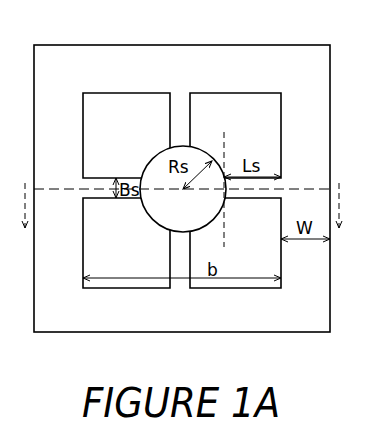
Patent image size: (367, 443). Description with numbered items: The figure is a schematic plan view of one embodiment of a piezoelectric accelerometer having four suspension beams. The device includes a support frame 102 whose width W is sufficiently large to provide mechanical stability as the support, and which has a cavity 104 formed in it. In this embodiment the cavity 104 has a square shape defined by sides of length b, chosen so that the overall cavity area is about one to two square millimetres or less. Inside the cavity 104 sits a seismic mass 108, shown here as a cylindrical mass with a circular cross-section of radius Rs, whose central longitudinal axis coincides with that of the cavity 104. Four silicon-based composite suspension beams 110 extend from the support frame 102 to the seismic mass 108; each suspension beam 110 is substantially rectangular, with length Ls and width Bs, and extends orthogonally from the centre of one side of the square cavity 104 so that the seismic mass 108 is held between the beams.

The support frame 102 is at (297, 80).
The cavity 104 is at (275, 121).
The seismic mass 108 is at (199, 218).
The suspension beams 110 is at (107, 177).